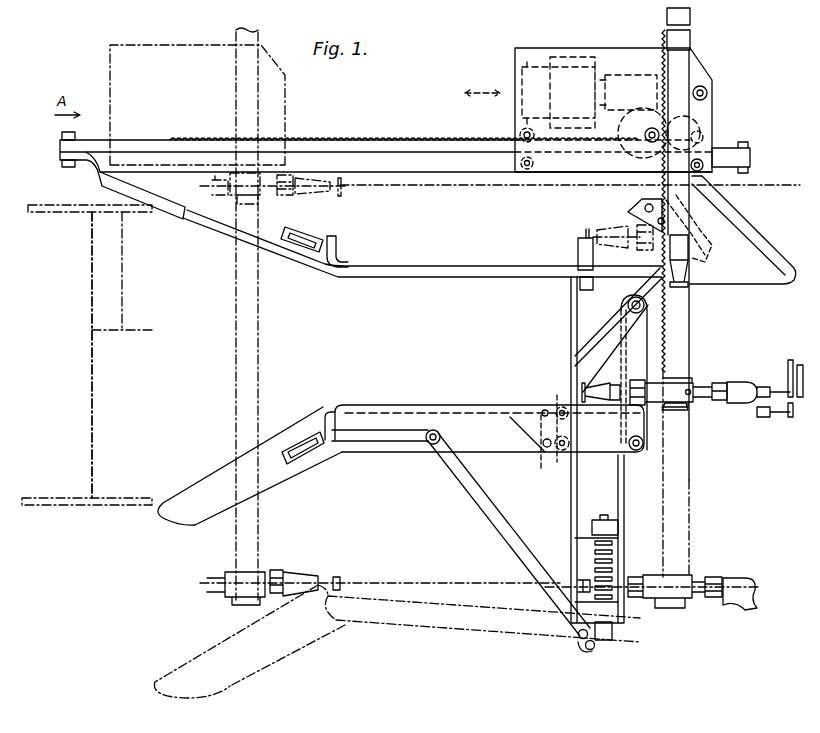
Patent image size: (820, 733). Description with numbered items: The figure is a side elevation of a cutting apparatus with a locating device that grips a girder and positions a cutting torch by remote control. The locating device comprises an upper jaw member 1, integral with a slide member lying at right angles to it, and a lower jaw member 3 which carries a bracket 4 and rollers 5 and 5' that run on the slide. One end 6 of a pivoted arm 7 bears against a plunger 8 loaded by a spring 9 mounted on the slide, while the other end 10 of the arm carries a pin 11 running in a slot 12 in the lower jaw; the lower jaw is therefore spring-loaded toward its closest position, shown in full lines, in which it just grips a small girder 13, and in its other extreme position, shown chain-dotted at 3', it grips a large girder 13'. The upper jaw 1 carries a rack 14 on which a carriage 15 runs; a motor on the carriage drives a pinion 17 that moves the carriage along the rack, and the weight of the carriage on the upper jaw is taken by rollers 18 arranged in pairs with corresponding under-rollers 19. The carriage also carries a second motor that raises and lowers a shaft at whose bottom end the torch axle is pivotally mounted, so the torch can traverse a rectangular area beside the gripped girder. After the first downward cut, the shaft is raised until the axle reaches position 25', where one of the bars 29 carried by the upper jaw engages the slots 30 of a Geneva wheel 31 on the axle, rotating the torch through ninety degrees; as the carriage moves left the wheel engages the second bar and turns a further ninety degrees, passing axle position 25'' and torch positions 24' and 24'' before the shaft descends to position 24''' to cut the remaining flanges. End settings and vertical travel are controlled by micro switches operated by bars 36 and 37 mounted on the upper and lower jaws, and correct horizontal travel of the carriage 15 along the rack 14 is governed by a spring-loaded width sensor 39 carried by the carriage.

The upper jaw member 1 is at (462, 237).
The lower jaw member 3 is at (489, 423).
The lower jaw member in extreme open position 3' is at (397, 641).
The bracket 4 is at (640, 355).
The rollers 5 is at (595, 369).
The pivot pin 5' is at (556, 455).
The end of pivoted arm 6 is at (598, 653).
The pivoted arm 7 is at (498, 510).
The plunger 8 is at (613, 632).
The spring 9 is at (612, 564).
The other end of arm 10 is at (428, 446).
The pin 11 is at (442, 436).
The slot 12 is at (372, 442).
The small girder 13 is at (88, 355).
The large girder 13' is at (105, 355).
The rack 14 is at (350, 139).
The carriage 15 is at (542, 48).
The pinion 17 is at (652, 127).
The rollers 18 is at (505, 120).
The under-rollers 19 is at (526, 172).
The pneumatic fitting 24' is at (652, 578).
The torch position 24'' is at (277, 198).
The torch position 24''' is at (380, 574).
The axle position 25' is at (700, 292).
The pawl lever 25'' is at (713, 228).
The bars 29 is at (633, 212).
The slots 30 is at (692, 378).
The Geneva wheel 31 is at (686, 418).
The bar 36 is at (343, 263).
The bar 37 is at (340, 413).
The spring-loaded width sensor 39 is at (760, 248).